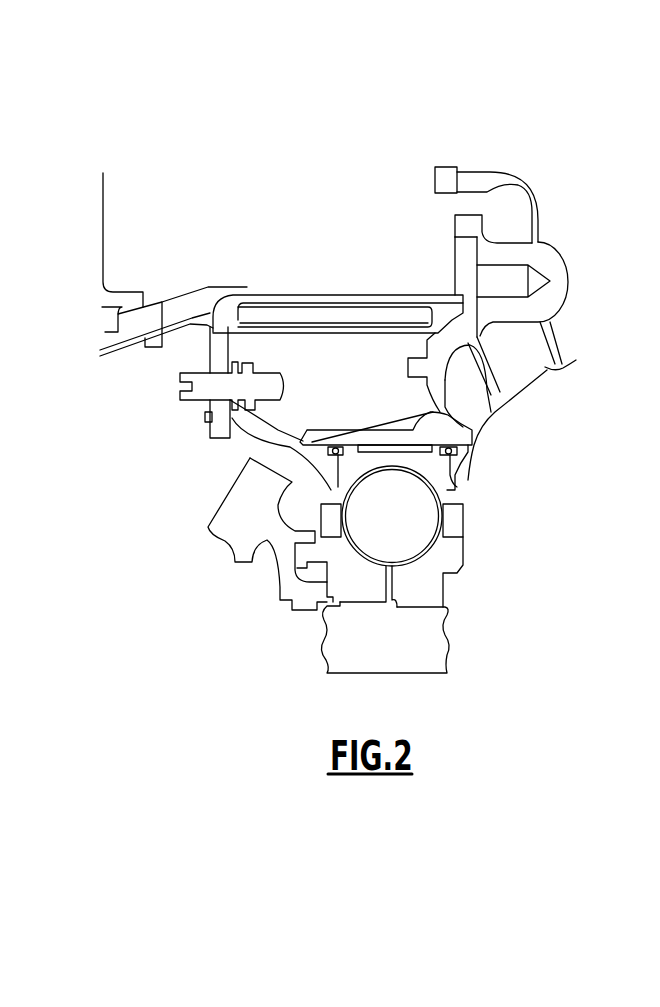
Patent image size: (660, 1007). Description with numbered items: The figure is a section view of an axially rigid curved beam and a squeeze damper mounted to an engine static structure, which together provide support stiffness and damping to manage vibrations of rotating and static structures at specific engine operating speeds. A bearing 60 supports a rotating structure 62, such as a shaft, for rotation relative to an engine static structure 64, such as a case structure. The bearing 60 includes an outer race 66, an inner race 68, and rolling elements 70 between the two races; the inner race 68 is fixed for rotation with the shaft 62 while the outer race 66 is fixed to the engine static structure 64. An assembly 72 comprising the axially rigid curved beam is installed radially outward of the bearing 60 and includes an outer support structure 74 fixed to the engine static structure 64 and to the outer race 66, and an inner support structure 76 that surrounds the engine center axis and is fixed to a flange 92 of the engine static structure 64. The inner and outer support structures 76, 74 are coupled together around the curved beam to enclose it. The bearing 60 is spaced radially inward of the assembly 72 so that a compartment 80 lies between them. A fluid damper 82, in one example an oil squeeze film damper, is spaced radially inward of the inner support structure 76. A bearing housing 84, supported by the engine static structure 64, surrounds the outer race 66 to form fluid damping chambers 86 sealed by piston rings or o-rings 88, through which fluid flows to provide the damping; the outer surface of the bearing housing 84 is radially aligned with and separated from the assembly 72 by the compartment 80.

The bearing 60 is at (482, 558).
The rotating structure 62 is at (442, 653).
The engine static structure 64 is at (501, 378).
The outer race 66 is at (466, 488).
The inner race 68 is at (368, 587).
The rolling elements 70 is at (408, 532).
The assembly 72 is at (313, 270).
The outer support structure 74 is at (305, 296).
The inner support structure 76 is at (400, 332).
The compartment 80 is at (282, 417).
The fluid damper 82 is at (470, 470).
The bearing housing 84 is at (352, 438).
The fluid damping chambers 86 is at (400, 450).
The piston rings or o-rings 88 is at (338, 487).
The flange 92 is at (468, 252).